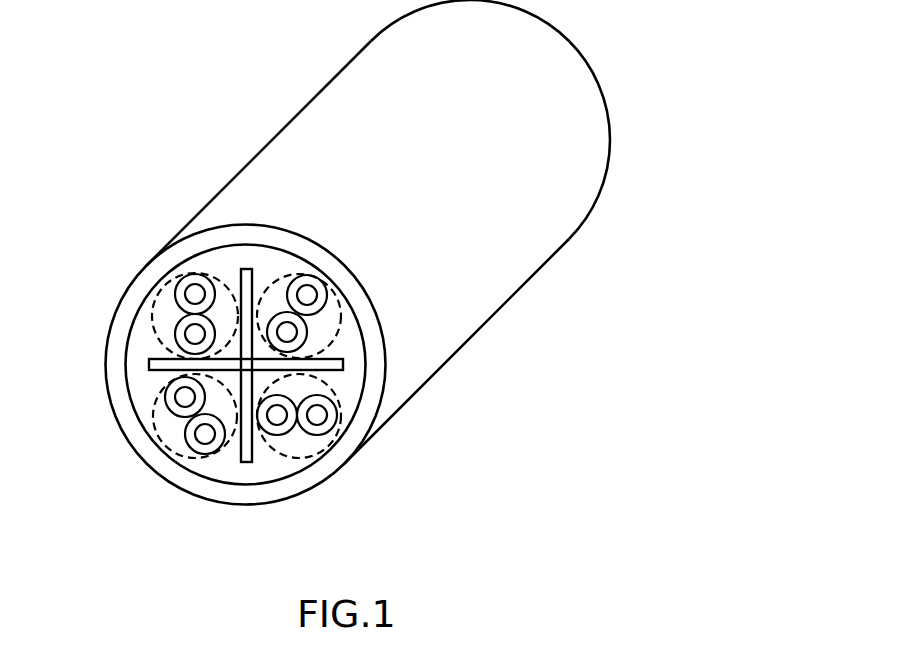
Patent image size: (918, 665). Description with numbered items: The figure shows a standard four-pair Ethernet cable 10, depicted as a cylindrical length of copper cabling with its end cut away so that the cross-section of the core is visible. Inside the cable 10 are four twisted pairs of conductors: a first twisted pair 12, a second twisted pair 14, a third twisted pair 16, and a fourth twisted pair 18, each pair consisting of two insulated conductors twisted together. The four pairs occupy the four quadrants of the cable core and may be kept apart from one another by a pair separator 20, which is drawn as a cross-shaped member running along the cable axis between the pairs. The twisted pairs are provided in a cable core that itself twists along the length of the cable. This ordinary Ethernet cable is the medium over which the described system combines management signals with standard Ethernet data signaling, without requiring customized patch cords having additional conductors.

The four-pair Ethernet cable 10 is at (178, 153).
The first twisted pair of conductors 12 is at (138, 334).
The second twisted pair of conductors 14 is at (355, 333).
The third twisted pair of conductors 16 is at (277, 472).
The fourth twisted pair of conductors 18 is at (216, 472).
The pair separator 20 is at (343, 364).